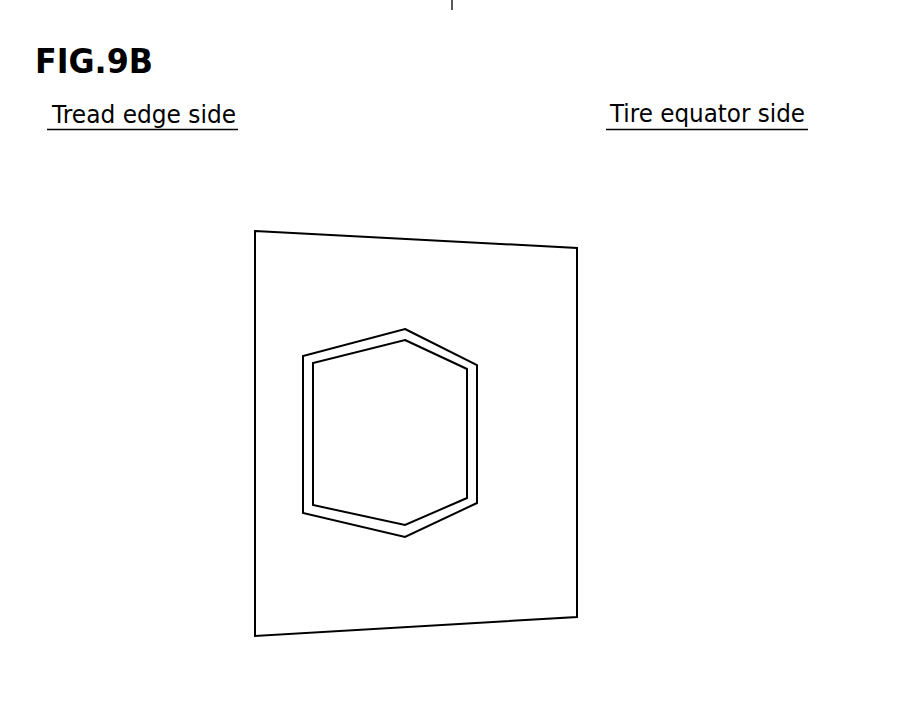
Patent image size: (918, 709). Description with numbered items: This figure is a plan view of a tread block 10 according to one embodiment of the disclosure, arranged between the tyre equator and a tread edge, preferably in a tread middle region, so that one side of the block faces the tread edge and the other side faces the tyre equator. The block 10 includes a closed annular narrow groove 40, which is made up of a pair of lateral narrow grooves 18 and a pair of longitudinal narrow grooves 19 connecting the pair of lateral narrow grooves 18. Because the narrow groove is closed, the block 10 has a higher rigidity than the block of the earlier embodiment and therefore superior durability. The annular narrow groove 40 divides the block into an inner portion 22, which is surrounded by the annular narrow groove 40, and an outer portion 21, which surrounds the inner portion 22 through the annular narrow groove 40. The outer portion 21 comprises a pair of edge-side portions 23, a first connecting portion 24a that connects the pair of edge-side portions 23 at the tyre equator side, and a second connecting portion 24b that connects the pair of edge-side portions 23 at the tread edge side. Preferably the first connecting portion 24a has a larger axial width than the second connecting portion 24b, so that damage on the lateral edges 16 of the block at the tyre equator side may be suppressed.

The block 10 is at (233, 250).
The lateral edges 16 is at (485, 243).
The lateral narrow grooves 18 is at (352, 349).
The longitudinal narrow grooves 19 is at (308, 436).
The outer portion 21 is at (525, 383).
The inner portion 22 is at (405, 403).
The edge-side portions 23 is at (393, 278).
The first connecting portion 24a is at (532, 483).
The second connecting portion 24b is at (282, 479).
The annular narrow groove 40 is at (308, 400).